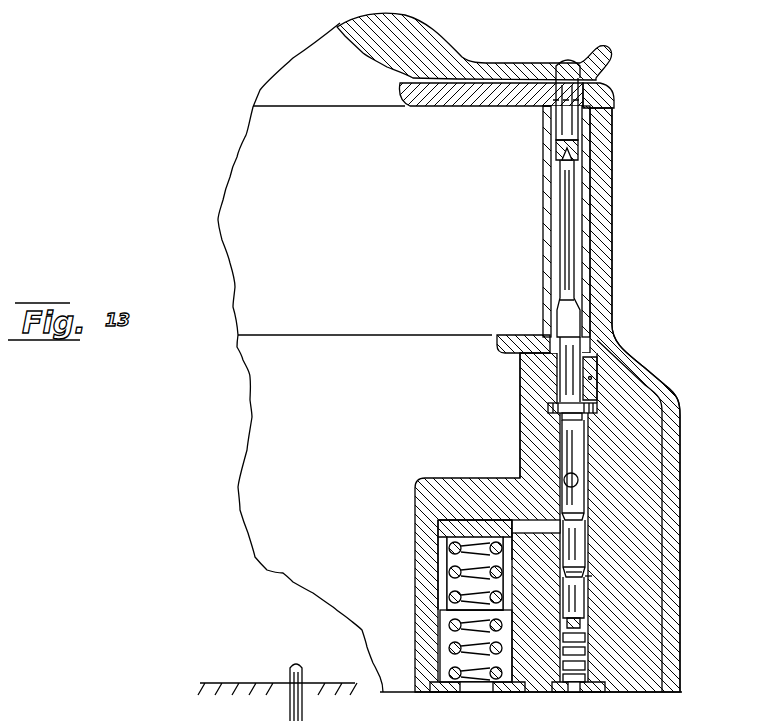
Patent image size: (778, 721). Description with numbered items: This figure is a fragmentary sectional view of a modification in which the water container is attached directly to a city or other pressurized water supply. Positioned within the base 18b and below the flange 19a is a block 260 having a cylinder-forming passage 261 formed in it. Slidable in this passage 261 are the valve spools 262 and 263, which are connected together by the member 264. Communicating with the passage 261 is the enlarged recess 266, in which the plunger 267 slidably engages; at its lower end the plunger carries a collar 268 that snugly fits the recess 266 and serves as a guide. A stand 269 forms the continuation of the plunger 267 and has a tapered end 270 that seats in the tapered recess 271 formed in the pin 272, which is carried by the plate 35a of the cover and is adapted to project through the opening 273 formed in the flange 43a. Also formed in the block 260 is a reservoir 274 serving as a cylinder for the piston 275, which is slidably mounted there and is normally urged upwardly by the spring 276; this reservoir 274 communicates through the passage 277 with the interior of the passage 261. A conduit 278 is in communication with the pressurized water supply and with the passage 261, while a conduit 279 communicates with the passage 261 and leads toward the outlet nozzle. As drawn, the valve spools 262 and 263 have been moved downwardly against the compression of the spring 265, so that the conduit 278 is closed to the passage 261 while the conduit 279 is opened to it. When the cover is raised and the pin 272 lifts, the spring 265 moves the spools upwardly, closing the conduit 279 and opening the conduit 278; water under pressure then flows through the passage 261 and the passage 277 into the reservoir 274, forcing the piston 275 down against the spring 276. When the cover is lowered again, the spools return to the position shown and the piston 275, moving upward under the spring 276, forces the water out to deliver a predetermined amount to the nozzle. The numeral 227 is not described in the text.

The plate 35a is at (472, 62).
The flange 43a is at (600, 92).
The opening 273 is at (519, 118).
The pin 272 is at (572, 123).
The tapered recess 271 is at (566, 160).
The tapered end 270 is at (586, 160).
The stand 269 is at (568, 212).
The base 18b is at (608, 230).
The flange 19a is at (512, 334).
The plunger 267 is at (604, 347).
The enlarged recess 266 is at (589, 372).
The collar 268 is at (550, 410).
The valve spool 262 is at (572, 446).
The conduit 278 is at (576, 483).
The member 264 is at (557, 520).
The passage 277 is at (523, 523).
The block 260 is at (583, 550).
The passage 261 is at (584, 556).
The conduit 279 is at (592, 576).
The valve spool 263 is at (583, 590).
The spring 265 is at (580, 686).
The piston 275 is at (441, 544).
The reservoir 274 is at (437, 576).
The spring 276 is at (450, 647).
The pin 227 is at (280, 692).